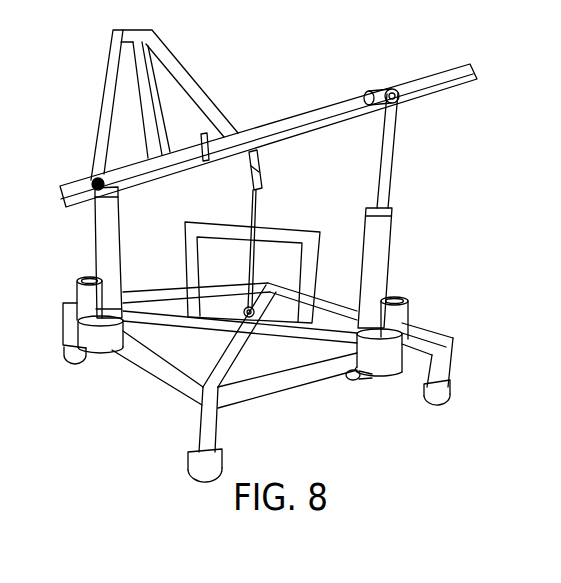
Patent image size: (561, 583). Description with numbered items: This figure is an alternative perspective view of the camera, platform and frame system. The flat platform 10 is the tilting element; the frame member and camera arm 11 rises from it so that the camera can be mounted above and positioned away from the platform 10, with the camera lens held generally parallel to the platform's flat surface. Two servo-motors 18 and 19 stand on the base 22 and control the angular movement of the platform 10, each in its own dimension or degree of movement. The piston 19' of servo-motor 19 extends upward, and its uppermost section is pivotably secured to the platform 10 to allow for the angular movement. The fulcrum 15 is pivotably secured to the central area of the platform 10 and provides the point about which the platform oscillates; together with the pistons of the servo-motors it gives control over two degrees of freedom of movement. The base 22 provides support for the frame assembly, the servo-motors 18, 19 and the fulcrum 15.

The platform 10 is at (462, 75).
The frame member and camera arm 11 is at (132, 78).
The fulcrum 15 is at (258, 206).
The servo-motor 18 is at (107, 247).
The servo-motor 19 is at (388, 294).
The piston 19' is at (409, 150).
The base 22 is at (158, 375).